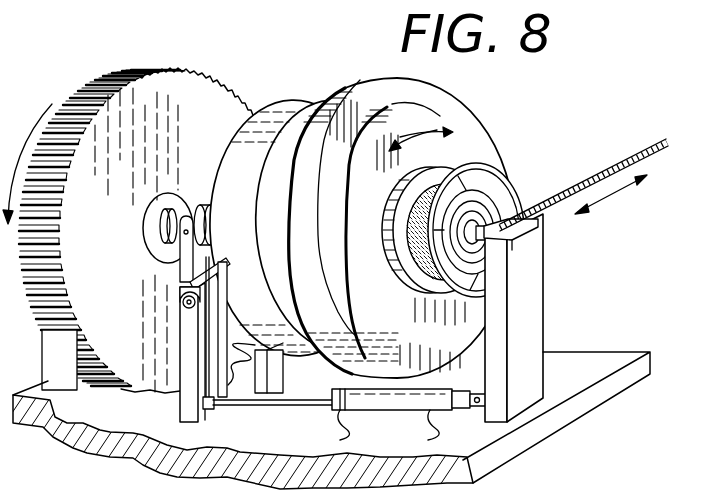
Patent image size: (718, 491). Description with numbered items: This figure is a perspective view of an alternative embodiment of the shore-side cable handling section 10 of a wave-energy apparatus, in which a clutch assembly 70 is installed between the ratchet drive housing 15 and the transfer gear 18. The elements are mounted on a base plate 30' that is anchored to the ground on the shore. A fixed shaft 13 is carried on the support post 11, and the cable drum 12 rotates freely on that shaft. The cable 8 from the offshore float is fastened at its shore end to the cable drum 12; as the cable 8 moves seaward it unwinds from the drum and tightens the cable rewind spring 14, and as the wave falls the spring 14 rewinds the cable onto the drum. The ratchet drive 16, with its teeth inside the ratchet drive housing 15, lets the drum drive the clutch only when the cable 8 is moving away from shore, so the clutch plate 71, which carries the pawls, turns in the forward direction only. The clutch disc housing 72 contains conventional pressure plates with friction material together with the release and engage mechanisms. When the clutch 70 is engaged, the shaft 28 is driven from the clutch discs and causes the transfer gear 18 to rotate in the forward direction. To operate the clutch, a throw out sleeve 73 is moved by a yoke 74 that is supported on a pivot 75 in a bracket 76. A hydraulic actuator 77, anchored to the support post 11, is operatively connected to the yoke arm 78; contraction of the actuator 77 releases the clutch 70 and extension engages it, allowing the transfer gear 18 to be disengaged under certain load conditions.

The cable 8 is at (628, 168).
The cable handling section 10 is at (569, 106).
The support post 11 is at (541, 290).
The cable drum 12 is at (508, 182).
The fixed shaft 13 is at (519, 241).
The cable rewind spring 14 is at (502, 203).
The ratchet drive housing 15 is at (468, 130).
The ratchet drive 16 is at (500, 149).
The transfer gear 18 is at (110, 103).
The shaft 28 is at (160, 222).
The base plate 30' is at (352, 410).
The clutch assembly 70 is at (243, 75).
The clutch plate 71 is at (320, 106).
The clutch disc housing 72 is at (268, 117).
The throw out sleeve 73 is at (190, 207).
The yoke 74 is at (182, 272).
The pivot 75 is at (186, 308).
The bracket 76 is at (182, 407).
The hydraulic actuator 77 is at (380, 408).
The yoke arm 78 is at (230, 384).